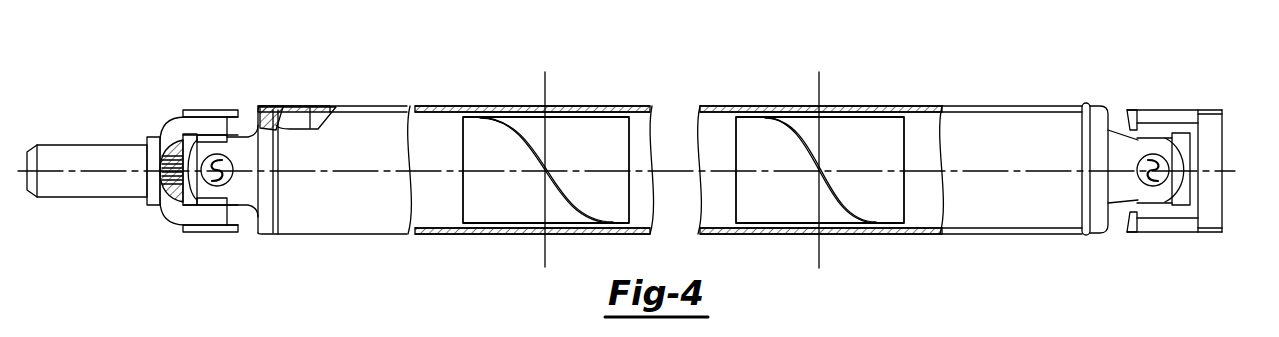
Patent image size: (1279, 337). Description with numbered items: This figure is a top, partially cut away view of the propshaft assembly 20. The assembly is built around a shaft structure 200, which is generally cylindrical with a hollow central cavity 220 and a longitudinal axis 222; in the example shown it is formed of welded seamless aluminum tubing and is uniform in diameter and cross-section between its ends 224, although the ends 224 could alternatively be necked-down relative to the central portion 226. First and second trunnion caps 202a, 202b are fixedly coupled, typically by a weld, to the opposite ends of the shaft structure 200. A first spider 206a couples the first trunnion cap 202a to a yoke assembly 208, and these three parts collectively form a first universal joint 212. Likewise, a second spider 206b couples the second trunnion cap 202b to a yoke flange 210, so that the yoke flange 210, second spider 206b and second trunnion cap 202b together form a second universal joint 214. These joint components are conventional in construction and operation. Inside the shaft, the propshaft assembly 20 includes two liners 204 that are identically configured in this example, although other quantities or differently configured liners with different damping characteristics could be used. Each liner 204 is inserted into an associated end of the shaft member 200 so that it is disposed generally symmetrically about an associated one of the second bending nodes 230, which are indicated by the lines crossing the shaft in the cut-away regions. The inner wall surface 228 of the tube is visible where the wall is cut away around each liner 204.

The propshaft assembly 20 is at (530, 41).
The shaft structure 200 is at (465, 236).
The first trunnion cap 202a is at (252, 107).
The second trunnion cap 202b is at (1091, 105).
The liner 204 is at (578, 124).
The first spider 206a is at (217, 207).
The second spider 206b is at (1130, 130).
The yoke assembly 208 is at (91, 155).
The yoke flange 210 is at (1150, 218).
The first universal joint 212 is at (195, 107).
The second universal joint 214 is at (1110, 230).
The hollow central cavity 220 is at (800, 123).
The longitudinal axis 222 is at (318, 171).
The ends 224 is at (318, 106).
The central portion 226 is at (746, 106).
The inner surface 228 is at (441, 114).
The second bending node 230 is at (543, 83).